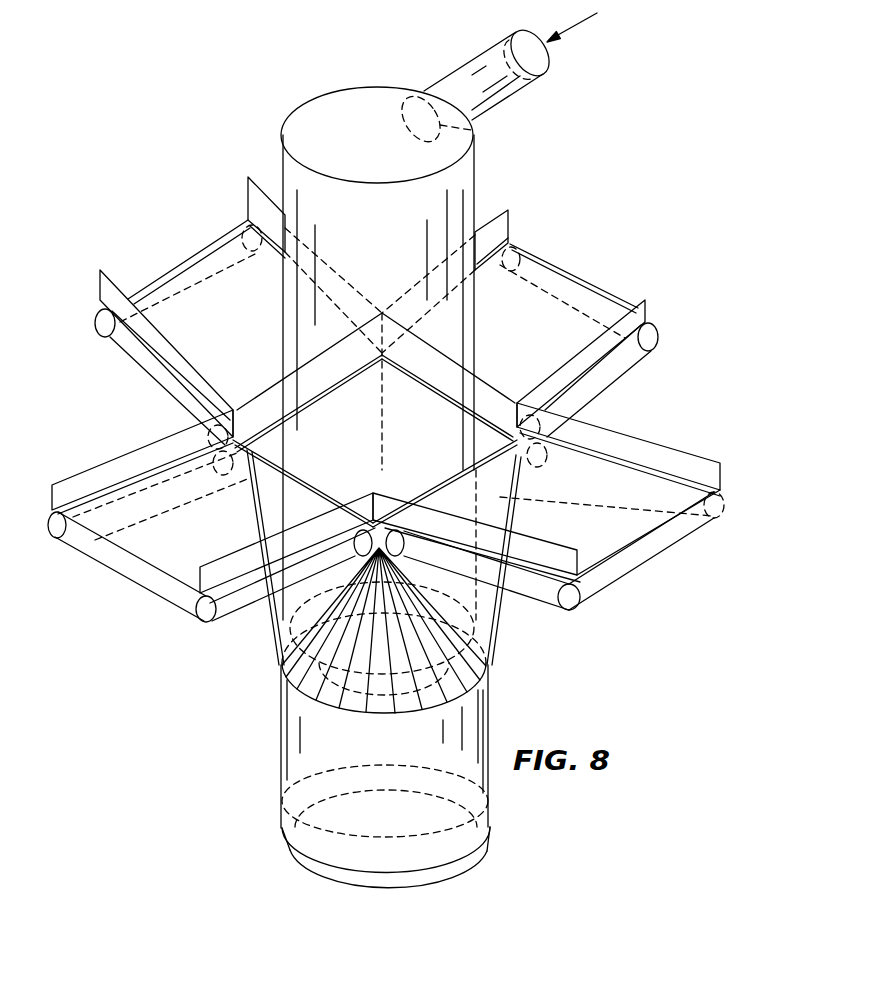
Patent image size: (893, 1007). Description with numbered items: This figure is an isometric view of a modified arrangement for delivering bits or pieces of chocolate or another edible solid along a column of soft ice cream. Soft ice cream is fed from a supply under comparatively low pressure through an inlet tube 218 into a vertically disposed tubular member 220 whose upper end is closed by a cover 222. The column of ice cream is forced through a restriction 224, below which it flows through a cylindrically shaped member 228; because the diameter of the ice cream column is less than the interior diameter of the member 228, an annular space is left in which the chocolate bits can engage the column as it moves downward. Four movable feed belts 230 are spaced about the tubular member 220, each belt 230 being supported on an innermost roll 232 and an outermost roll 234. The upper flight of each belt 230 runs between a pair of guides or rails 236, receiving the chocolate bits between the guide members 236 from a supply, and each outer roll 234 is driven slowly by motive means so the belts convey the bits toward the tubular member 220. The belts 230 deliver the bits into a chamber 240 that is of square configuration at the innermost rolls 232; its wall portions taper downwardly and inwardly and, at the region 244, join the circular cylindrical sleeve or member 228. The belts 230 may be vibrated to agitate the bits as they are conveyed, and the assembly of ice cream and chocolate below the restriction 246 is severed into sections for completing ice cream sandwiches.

The inlet tube 218 is at (504, 43).
The tubular member 220 is at (478, 170).
The cover 222 is at (368, 112).
The restriction 224 is at (315, 712).
The cylindrically shaped member 228 is at (280, 762).
The feed belts 230 is at (235, 293).
The innermost roll 232 is at (268, 385).
The outermost roll 234 is at (113, 327).
The guides or rails 236 is at (262, 195).
The chamber 240 is at (283, 448).
The region 244 is at (347, 713).
The restriction 246 is at (312, 877).